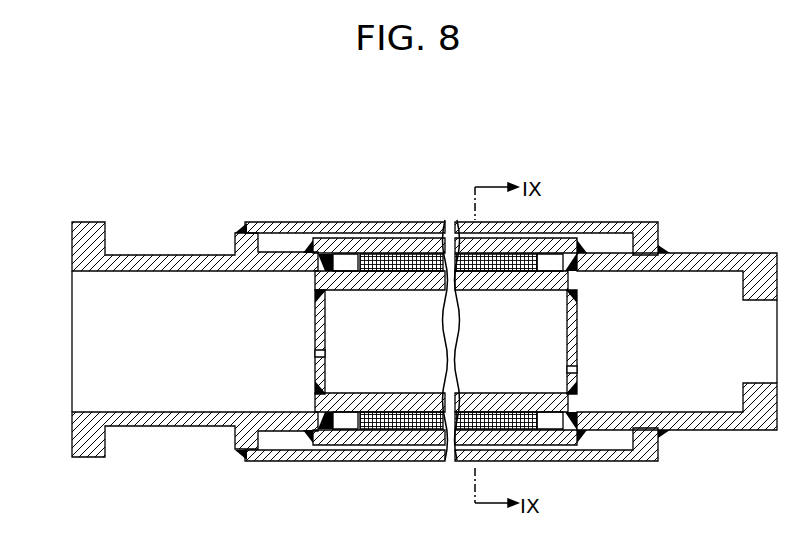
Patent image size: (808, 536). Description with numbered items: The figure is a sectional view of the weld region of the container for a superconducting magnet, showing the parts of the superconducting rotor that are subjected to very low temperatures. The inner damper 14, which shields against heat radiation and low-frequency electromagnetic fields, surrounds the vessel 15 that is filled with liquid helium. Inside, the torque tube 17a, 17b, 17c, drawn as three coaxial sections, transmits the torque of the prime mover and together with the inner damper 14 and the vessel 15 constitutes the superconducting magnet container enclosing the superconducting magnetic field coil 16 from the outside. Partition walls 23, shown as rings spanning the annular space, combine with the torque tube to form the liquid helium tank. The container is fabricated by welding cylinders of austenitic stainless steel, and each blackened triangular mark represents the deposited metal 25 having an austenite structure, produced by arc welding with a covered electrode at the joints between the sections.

The inner damper 14 is at (330, 229).
The vessel 15 is at (385, 242).
The superconducting magnetic field coil 16 is at (488, 268).
The torque tube 17a is at (400, 290).
The torque tube 17b is at (136, 271).
The torque tube 17c is at (652, 272).
The partition wall 23 is at (315, 327).
The deposited metal 25 is at (240, 228).